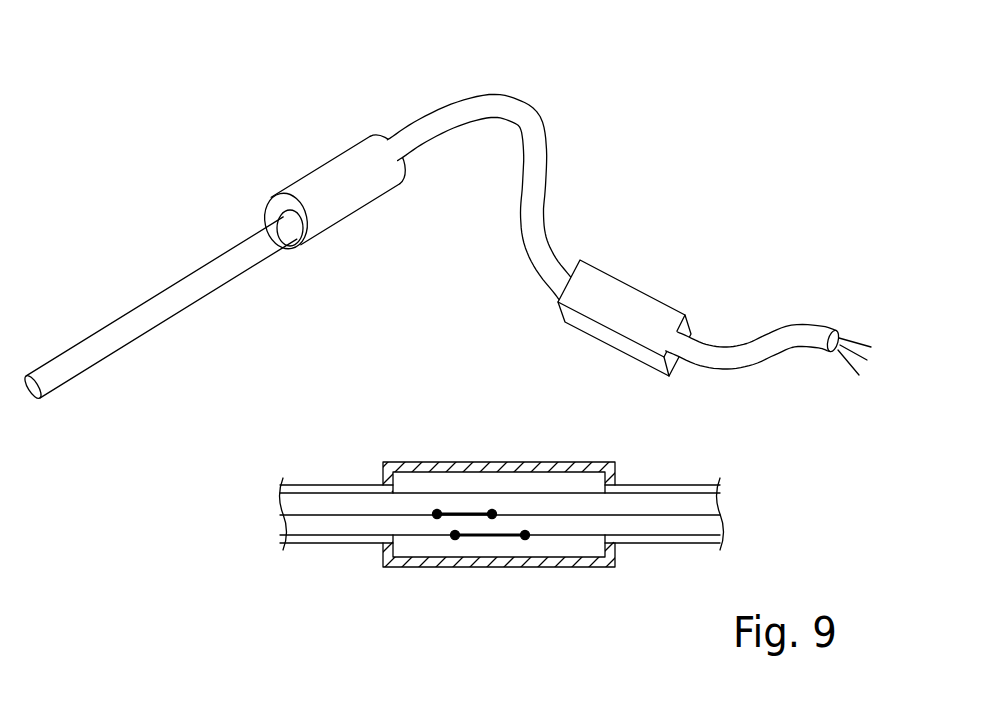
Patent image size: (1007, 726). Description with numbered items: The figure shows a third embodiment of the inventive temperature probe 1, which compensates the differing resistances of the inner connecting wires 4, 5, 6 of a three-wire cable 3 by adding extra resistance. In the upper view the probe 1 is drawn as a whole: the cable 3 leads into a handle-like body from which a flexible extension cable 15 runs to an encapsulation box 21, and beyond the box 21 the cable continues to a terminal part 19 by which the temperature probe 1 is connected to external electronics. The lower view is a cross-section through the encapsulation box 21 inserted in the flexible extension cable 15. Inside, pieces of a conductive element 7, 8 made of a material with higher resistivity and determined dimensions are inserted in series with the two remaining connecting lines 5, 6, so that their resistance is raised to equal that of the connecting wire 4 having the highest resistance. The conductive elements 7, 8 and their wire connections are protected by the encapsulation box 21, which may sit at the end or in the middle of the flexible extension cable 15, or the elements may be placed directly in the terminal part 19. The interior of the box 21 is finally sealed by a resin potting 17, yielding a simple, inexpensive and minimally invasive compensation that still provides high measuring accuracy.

The temperature probe 1 is at (213, 299).
The three-wire cable 3 is at (182, 291).
The flexible extension cable 15 is at (513, 112).
The encapsulation box 21 is at (650, 279).
The terminal part 19 is at (835, 311).
The connecting wire 4 is at (420, 493).
The connecting wire 5 is at (563, 513).
The connecting wire 6 is at (583, 537).
The conductive element 7 is at (455, 512).
The conductive element 8 is at (497, 538).
The resin potting 17 is at (558, 545).